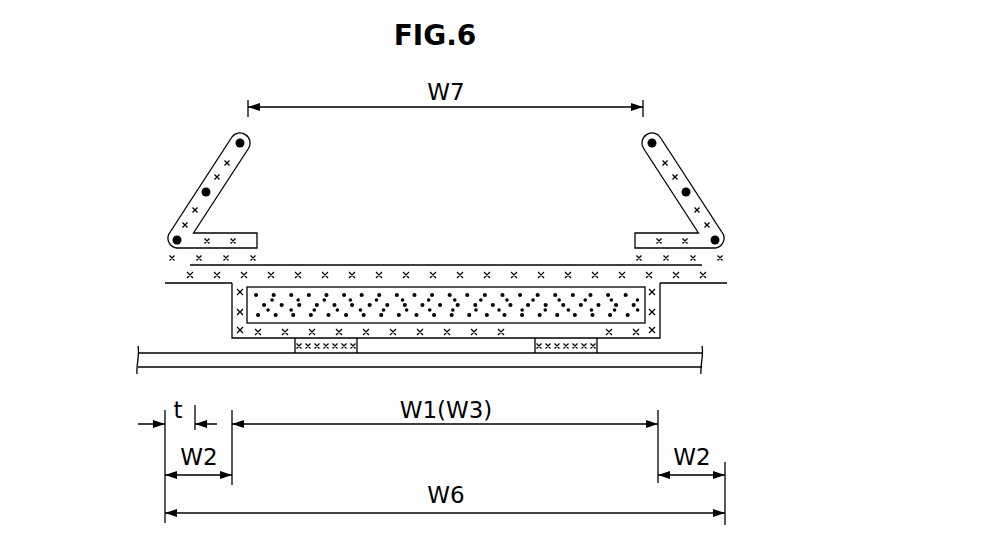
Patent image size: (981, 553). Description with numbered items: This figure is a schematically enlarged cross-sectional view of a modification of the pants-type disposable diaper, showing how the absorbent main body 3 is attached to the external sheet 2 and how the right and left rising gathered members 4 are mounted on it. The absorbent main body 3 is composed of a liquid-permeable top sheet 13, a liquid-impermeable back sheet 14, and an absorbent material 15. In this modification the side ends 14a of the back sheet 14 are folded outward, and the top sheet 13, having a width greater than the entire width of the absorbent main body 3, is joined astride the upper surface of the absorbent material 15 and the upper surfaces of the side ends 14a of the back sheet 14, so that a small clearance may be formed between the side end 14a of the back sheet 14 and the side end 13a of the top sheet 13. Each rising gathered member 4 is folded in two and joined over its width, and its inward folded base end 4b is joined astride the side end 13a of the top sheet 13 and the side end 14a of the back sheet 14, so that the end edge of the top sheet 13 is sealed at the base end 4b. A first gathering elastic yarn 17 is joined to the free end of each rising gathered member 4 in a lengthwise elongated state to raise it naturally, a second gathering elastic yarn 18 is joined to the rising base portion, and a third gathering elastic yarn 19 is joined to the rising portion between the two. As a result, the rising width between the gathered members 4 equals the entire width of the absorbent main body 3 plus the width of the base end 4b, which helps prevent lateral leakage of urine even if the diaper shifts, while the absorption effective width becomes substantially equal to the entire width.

The external sheet 2 is at (668, 379).
The absorbent main body 3 is at (666, 317).
The rising gathered member 4 is at (188, 213).
The base end 4b is at (223, 233).
The top sheet 13 is at (433, 265).
The side end of the top sheet 13a is at (238, 265).
The back sheet 14 is at (232, 310).
The side end of the back sheet 14a is at (183, 283).
The absorbent material 15 is at (487, 295).
The first gathering elastic yarn 17 is at (236, 141).
The second gathering elastic yarn 18 is at (172, 239).
The third gathering elastic yarn 19 is at (204, 190).